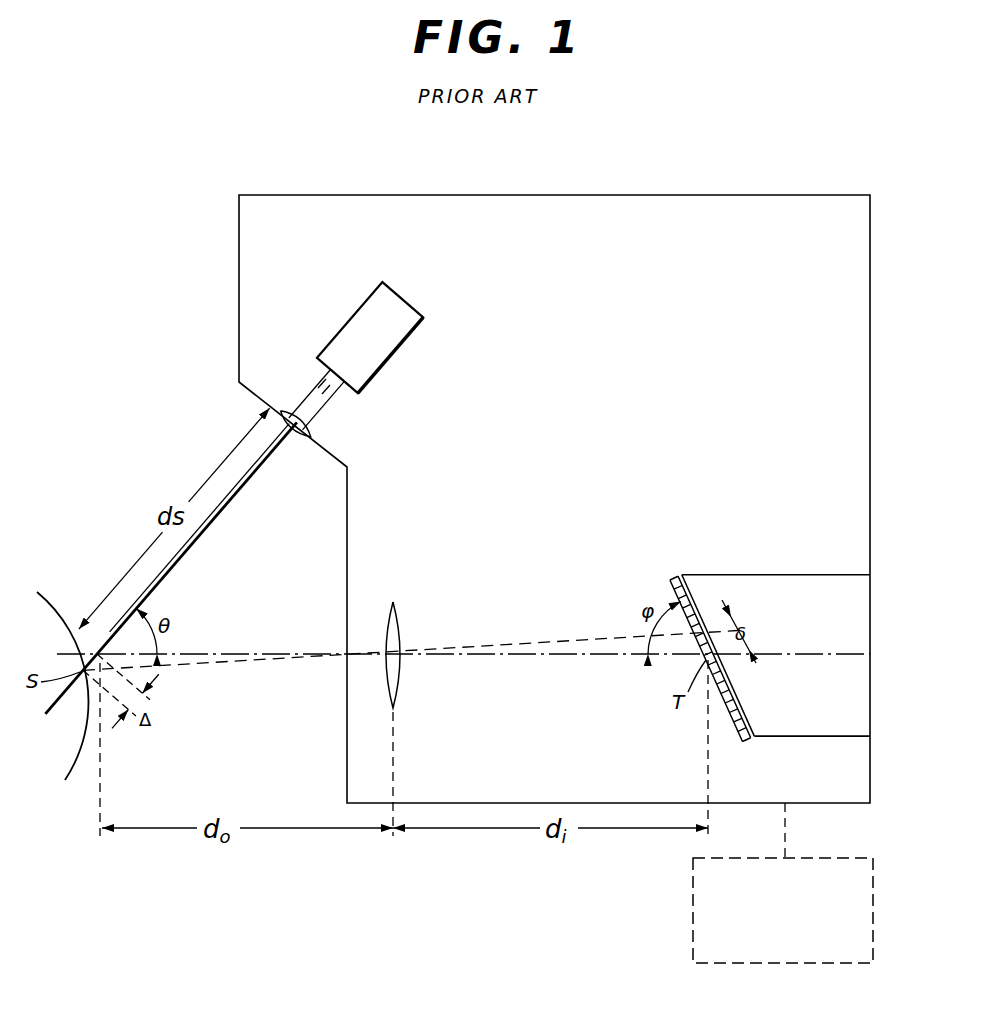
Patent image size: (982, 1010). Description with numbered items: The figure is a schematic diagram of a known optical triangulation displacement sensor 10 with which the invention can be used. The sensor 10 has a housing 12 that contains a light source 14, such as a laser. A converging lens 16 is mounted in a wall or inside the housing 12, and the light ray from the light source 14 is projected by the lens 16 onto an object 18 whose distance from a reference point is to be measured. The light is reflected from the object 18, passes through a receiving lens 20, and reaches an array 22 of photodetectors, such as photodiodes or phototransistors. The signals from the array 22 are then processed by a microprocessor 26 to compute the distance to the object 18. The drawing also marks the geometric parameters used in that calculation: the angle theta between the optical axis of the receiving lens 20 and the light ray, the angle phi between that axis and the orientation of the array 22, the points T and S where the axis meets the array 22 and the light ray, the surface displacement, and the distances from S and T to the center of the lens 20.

The optical triangulation displacement sensor 10 is at (465, 156).
The housing 12 is at (317, 195).
The light source 14 is at (353, 313).
The converging lens 16 is at (297, 444).
The object 18 is at (45, 596).
The receiving lens 20 is at (400, 632).
The array of photodetectors 22 is at (676, 578).
The microprocessor 26 is at (693, 912).